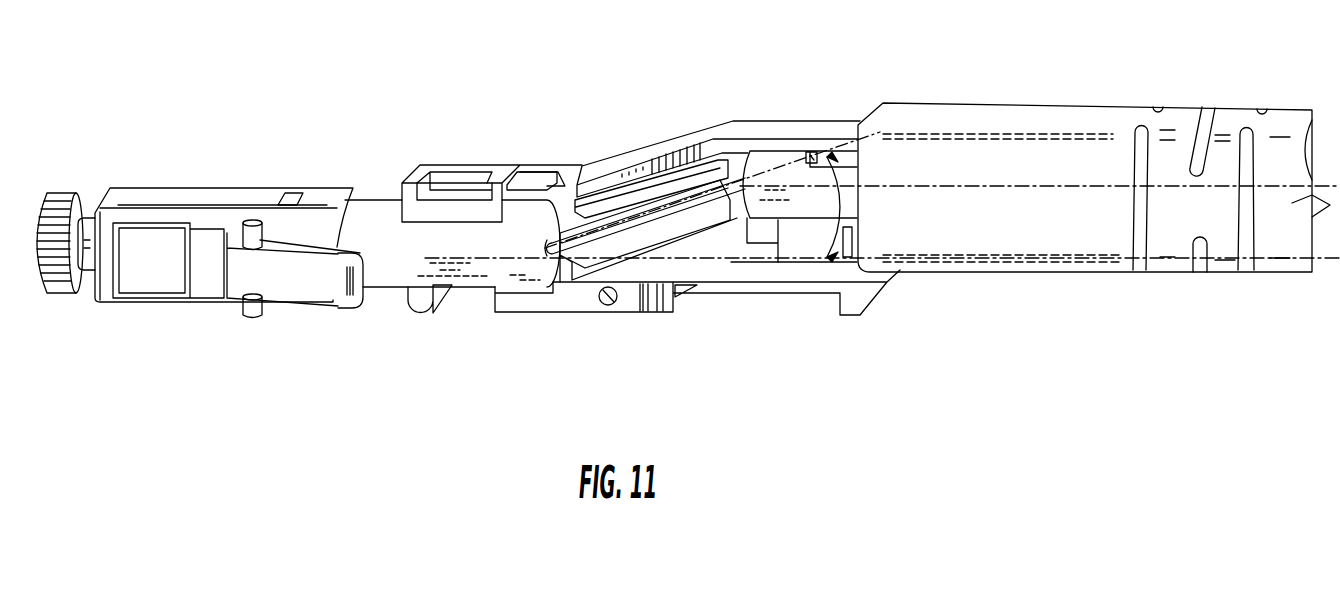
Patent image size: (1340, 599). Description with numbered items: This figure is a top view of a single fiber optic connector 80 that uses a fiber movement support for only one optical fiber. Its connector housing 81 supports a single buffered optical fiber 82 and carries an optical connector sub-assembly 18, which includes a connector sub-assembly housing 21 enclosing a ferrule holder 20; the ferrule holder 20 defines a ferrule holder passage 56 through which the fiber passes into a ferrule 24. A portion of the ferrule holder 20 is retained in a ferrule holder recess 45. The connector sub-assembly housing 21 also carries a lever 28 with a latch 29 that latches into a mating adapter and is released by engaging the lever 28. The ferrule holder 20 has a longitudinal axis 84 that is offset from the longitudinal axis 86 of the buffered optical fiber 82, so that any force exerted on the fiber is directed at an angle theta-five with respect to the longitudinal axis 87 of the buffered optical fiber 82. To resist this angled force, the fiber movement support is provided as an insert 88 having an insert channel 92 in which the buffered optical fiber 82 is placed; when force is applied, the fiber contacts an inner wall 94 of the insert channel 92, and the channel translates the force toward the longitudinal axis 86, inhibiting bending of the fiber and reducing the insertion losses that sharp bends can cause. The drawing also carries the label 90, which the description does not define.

The optical connector sub-assembly 18 is at (277, 160).
The ferrule holder 20 is at (380, 200).
The connector sub-assembly housing 21 is at (180, 187).
The ferrule 24 is at (88, 213).
The lever 28 is at (347, 305).
The latch 29 is at (263, 310).
The ferrule holder recess 45 is at (452, 220).
The ferrule holder passage 56 is at (550, 266).
The single fiber optic connector 80 is at (549, 102).
The connector housing 81 is at (632, 150).
The buffered optical fiber 82 is at (697, 197).
The longitudinal axis of the ferrule holder 84 is at (733, 263).
The longitudinal axis of the buffered optical fiber 86 is at (1053, 187).
The longitudinal axis of the buffered optical fiber 87 is at (747, 183).
The insert 88 is at (1010, 245).
The pivot 90 is at (788, 147).
The insert channel 92 is at (683, 240).
The inner wall 94 is at (672, 200).